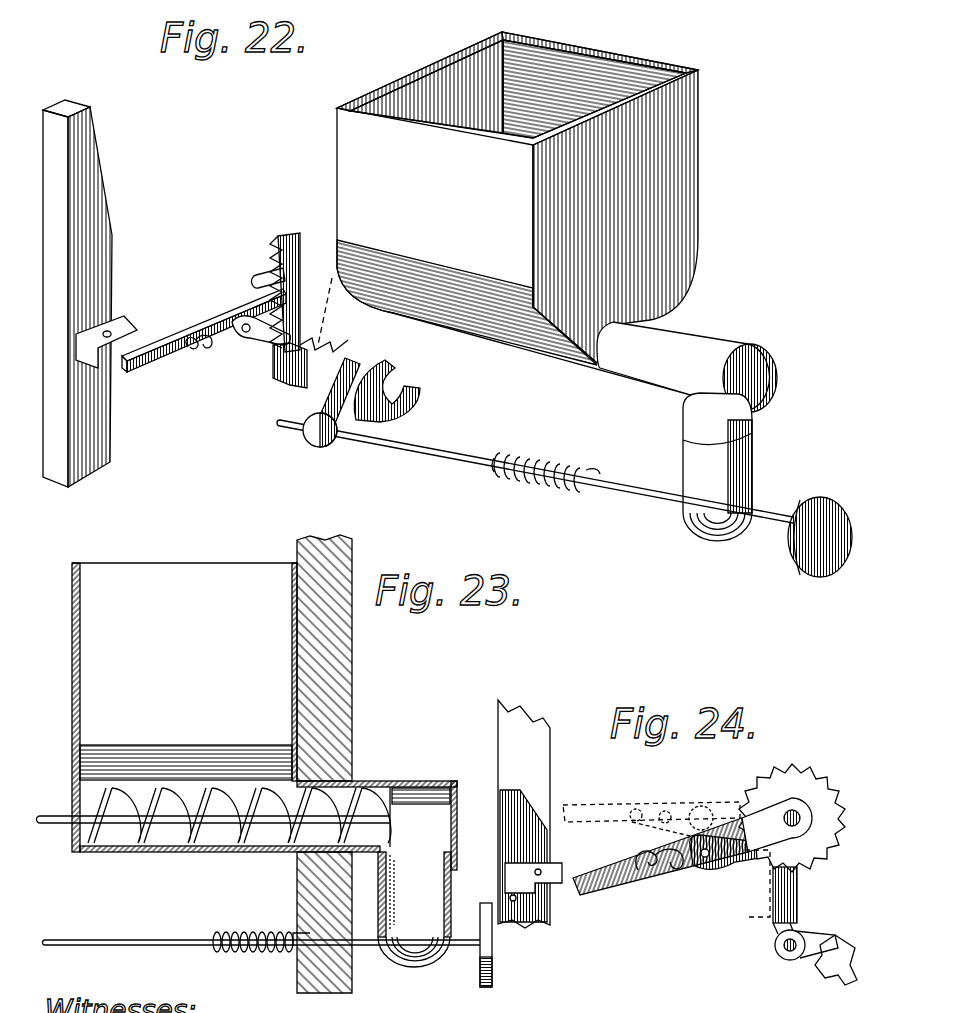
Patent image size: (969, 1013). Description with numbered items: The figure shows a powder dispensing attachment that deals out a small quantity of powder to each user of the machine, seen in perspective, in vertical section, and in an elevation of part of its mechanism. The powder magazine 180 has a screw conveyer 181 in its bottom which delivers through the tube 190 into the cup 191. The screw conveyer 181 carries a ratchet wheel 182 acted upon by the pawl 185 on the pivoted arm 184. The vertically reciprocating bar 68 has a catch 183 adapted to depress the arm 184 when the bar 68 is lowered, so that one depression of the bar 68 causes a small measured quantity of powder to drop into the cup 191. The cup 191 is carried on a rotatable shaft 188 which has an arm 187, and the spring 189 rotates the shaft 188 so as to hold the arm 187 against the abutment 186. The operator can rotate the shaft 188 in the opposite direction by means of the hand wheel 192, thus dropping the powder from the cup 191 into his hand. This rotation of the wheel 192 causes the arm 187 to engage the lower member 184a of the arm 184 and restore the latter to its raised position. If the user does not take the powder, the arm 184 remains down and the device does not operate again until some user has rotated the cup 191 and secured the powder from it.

In FIG. 22, the vertically reciprocating bar 68 is at (97, 420).
In FIG. 24, the vertically reciprocating bar 68 is at (535, 773).
In FIG. 22, the powder magazine 180 is at (703, 204).
In FIG. 23, the powder magazine 180 is at (264, 764).
In FIG. 23, the screw conveyer 181 is at (222, 835).
In FIG. 22, the ratchet wheel 182 is at (300, 252).
In FIG. 24, the ratchet wheel 182 is at (792, 803).
In FIG. 22, the catch 183 is at (118, 332).
In FIG. 24, the catch 183 is at (520, 870).
In FIG. 22, the pivoted arm 184 is at (193, 325).
In FIG. 24, the pivoted arm 184 is at (632, 878).
In FIG. 22, the lower member of the arm 184a is at (364, 371).
In FIG. 24, the lower member of the arm 184a is at (847, 887).
In FIG. 22, the pawl 185 is at (260, 338).
In FIG. 24, the pawl 185 is at (720, 877).
In FIG. 22, the abutment 186 is at (412, 403).
In FIG. 24, the abutment 186 is at (818, 970).
In FIG. 22, the arm 187 is at (303, 418).
In FIG. 24, the arm 187 is at (813, 930).
In FIG. 22, the rotatable shaft 188 is at (435, 460).
In FIG. 23, the rotatable shaft 188 is at (146, 940).
In FIG. 24, the rotatable shaft 188 is at (782, 950).
In FIG. 22, the spring 189 is at (554, 470).
In FIG. 23, the spring 189 is at (248, 935).
In FIG. 22, the tube 190 is at (742, 470).
In FIG. 23, the tube 190 is at (414, 909).
In FIG. 22, the cup 191 is at (715, 533).
In FIG. 23, the cup 191 is at (412, 966).
In FIG. 22, the hand wheel 192 is at (818, 573).
In FIG. 23, the hand wheel 192 is at (493, 963).